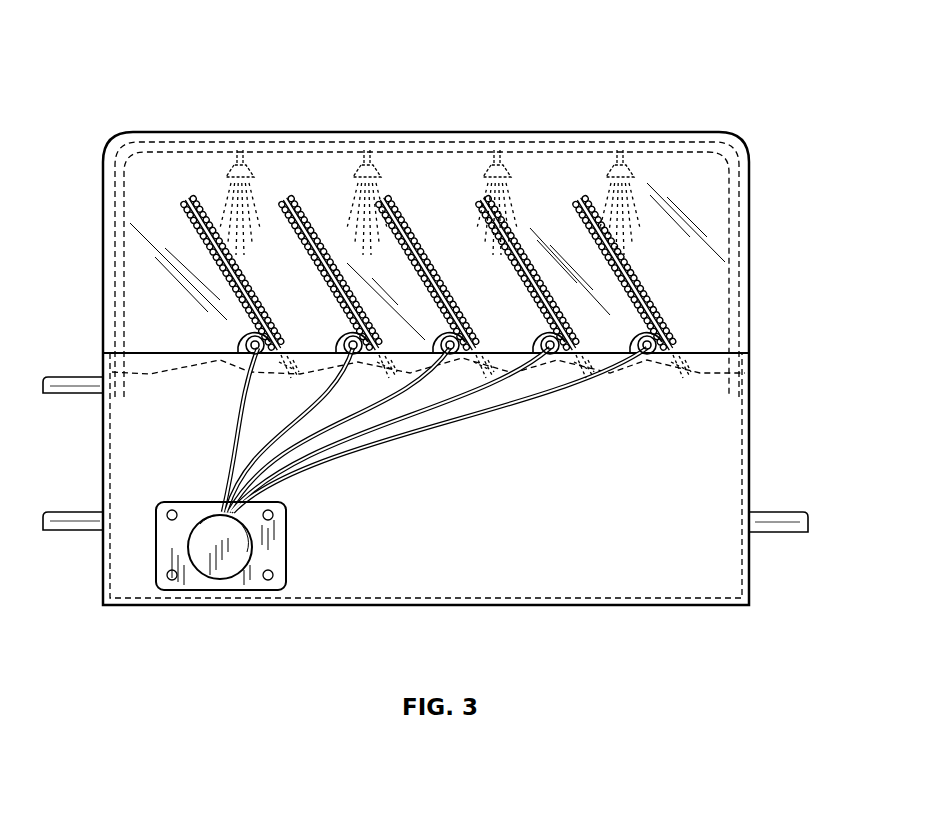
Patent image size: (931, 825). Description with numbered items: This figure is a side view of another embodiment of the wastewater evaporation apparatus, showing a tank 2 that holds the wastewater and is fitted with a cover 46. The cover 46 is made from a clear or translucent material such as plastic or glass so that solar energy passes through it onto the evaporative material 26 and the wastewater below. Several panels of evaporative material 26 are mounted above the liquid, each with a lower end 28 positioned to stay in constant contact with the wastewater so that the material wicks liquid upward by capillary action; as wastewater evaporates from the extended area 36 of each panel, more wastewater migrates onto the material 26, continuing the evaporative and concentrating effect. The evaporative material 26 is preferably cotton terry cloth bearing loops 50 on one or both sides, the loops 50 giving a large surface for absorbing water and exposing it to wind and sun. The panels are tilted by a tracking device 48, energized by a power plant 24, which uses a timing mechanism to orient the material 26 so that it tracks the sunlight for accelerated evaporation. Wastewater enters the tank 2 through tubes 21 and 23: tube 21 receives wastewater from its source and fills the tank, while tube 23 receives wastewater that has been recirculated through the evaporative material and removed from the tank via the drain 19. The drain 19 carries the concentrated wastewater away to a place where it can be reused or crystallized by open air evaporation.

The tank 2 is at (633, 606).
The drain 19 is at (808, 532).
The tube 21 is at (43, 395).
The tube 23 is at (43, 532).
The power plant 24 is at (212, 553).
The evaporative material 26 is at (308, 213).
The lower end 28 is at (407, 213).
The extended area 36 is at (508, 213).
The cover 46 is at (660, 132).
The tracking device 48 is at (260, 545).
The loops 50 is at (199, 198).